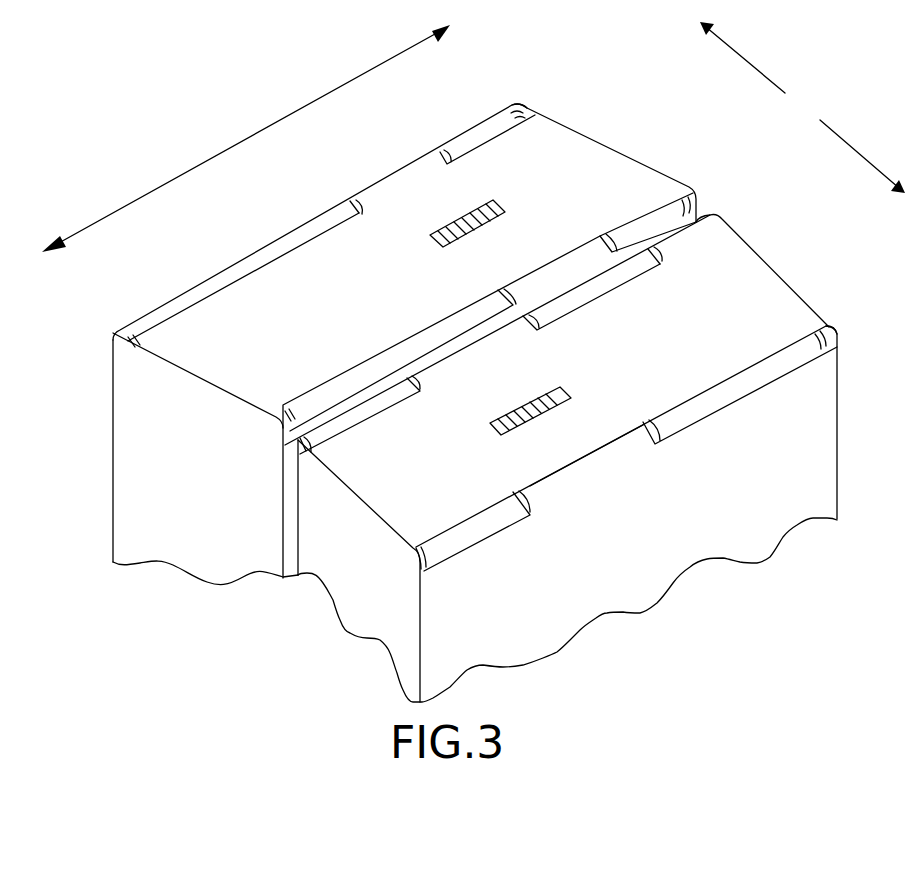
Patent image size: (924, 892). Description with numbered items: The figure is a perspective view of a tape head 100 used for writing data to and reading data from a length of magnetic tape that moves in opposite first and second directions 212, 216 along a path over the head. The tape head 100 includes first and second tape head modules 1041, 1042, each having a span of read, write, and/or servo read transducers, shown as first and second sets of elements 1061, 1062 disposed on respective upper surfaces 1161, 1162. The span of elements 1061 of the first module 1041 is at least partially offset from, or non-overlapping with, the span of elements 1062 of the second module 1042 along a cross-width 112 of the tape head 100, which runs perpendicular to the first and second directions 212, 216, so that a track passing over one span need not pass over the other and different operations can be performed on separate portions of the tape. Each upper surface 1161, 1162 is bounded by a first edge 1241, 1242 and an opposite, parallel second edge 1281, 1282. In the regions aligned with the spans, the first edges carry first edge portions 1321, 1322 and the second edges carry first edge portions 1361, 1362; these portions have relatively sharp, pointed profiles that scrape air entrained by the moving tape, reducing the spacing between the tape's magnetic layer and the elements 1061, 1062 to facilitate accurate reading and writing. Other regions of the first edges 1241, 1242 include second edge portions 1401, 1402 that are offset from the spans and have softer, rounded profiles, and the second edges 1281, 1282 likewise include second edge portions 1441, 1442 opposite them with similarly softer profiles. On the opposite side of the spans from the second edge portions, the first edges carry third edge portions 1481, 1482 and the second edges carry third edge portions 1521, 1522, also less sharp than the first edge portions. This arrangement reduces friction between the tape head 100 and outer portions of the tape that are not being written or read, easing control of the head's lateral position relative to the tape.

The tape head 100 is at (465, 361).
The cross-width 112 is at (246, 128).
The first direction 212 is at (758, 52).
The second direction 216 is at (869, 150).
The first tape head module 1041 is at (437, 302).
The second tape head module 1042 is at (599, 434).
The first set of elements 1061 is at (500, 195).
The second set of elements 1062 is at (566, 385).
The upper surface of first module 1161 is at (417, 344).
The upper surface of second module 1162 is at (589, 459).
The first edge of first module 1241 is at (732, 171).
The first edge of second module 1242 is at (748, 194).
The second edge of first module 1281 is at (515, 69).
The second edge of second module 1282 is at (864, 335).
The first edge portion of first edge of first module 1321 is at (432, 322).
The first edge portion of first edge of second module 1322 is at (435, 391).
The first edge portion of second edge of first module 1361 is at (324, 178).
The first edge portion of second edge of second module 1362 is at (594, 487).
The second edge portion of first edge of first module 1401 is at (292, 369).
The second edge portion of first edge of second module 1402 is at (607, 299).
The second edge portion of second edge of first module 1441 is at (225, 280).
The second edge portion of second edge of second module 1442 is at (740, 401).
The third edge portion of first edge of first module 1481 is at (642, 207).
The third edge portion of first edge of second module 1482 is at (354, 454).
The third edge portion of second edge of first module 1521 is at (472, 120).
The third edge portion of second edge of second module 1522 is at (486, 534).